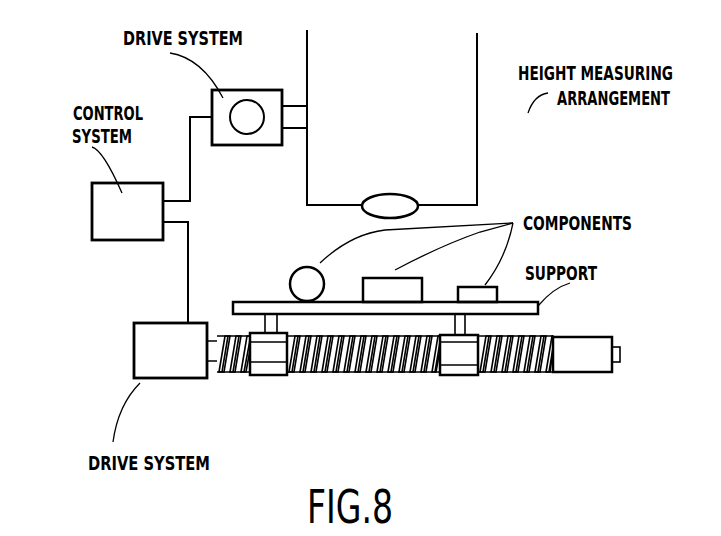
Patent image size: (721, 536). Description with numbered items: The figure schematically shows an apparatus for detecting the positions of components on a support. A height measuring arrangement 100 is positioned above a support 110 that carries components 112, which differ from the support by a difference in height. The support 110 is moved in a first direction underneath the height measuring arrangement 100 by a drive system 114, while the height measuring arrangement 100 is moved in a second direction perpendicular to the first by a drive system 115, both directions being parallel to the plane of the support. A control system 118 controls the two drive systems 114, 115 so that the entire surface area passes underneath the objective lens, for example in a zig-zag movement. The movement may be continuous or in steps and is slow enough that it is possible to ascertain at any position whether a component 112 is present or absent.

The height measuring arrangement 100 is at (477, 125).
The support 110 is at (538, 308).
The components 112 is at (308, 282).
The drive system 114 is at (134, 350).
The drive system 115 is at (227, 88).
The control system 118 is at (142, 182).